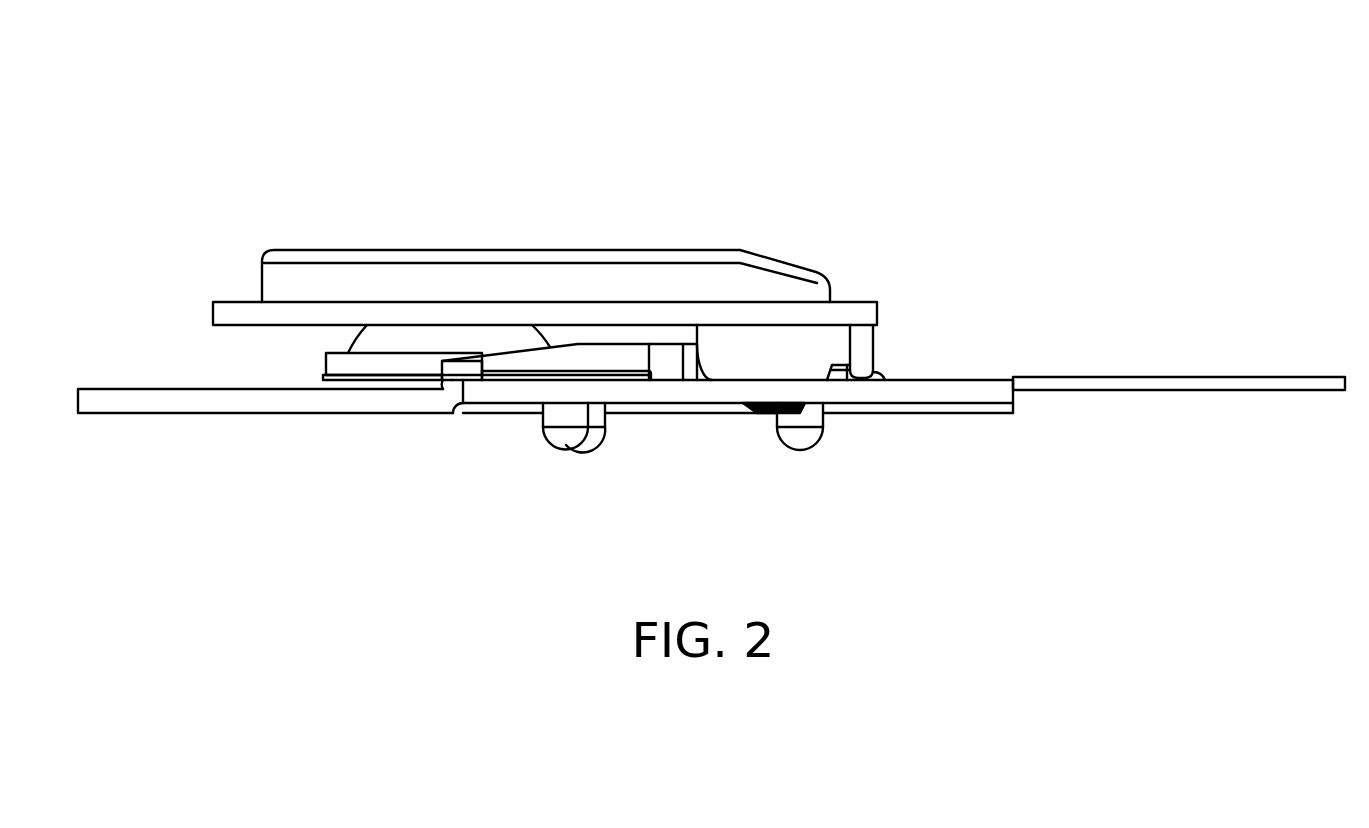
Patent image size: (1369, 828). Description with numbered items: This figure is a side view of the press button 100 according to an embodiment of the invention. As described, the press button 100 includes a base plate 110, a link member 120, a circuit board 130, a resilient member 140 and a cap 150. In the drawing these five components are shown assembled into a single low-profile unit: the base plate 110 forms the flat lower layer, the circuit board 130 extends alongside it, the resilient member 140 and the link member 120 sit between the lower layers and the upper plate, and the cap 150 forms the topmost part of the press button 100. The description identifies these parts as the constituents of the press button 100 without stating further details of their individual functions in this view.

The press button 100 is at (110, 118).
The base plate 110 is at (258, 402).
The link member 120 is at (667, 363).
The circuit board 130 is at (1178, 383).
The resilient member 140 is at (385, 363).
The cap 150 is at (702, 275).